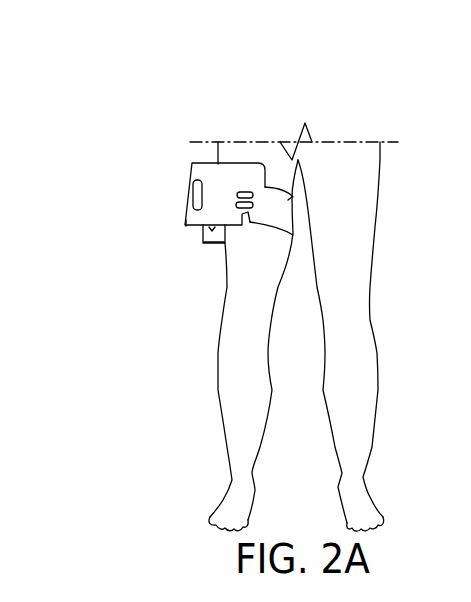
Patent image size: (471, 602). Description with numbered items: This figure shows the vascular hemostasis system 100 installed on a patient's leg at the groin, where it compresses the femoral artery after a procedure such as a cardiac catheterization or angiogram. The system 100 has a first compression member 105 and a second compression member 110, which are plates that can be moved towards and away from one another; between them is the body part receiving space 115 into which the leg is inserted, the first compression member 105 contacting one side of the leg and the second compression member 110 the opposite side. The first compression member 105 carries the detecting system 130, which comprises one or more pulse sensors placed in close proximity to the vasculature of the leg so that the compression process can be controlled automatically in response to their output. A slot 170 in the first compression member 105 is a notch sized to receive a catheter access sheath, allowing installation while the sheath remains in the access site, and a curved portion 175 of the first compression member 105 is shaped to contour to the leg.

The vascular hemostasis system 100 is at (142, 185).
The first compression member 105 is at (205, 171).
The second compression member 110 is at (202, 238).
The body part receiving space 115 is at (176, 233).
The detecting system 130 is at (245, 176).
The slot 170 is at (253, 220).
The curved portion 175 is at (287, 203).